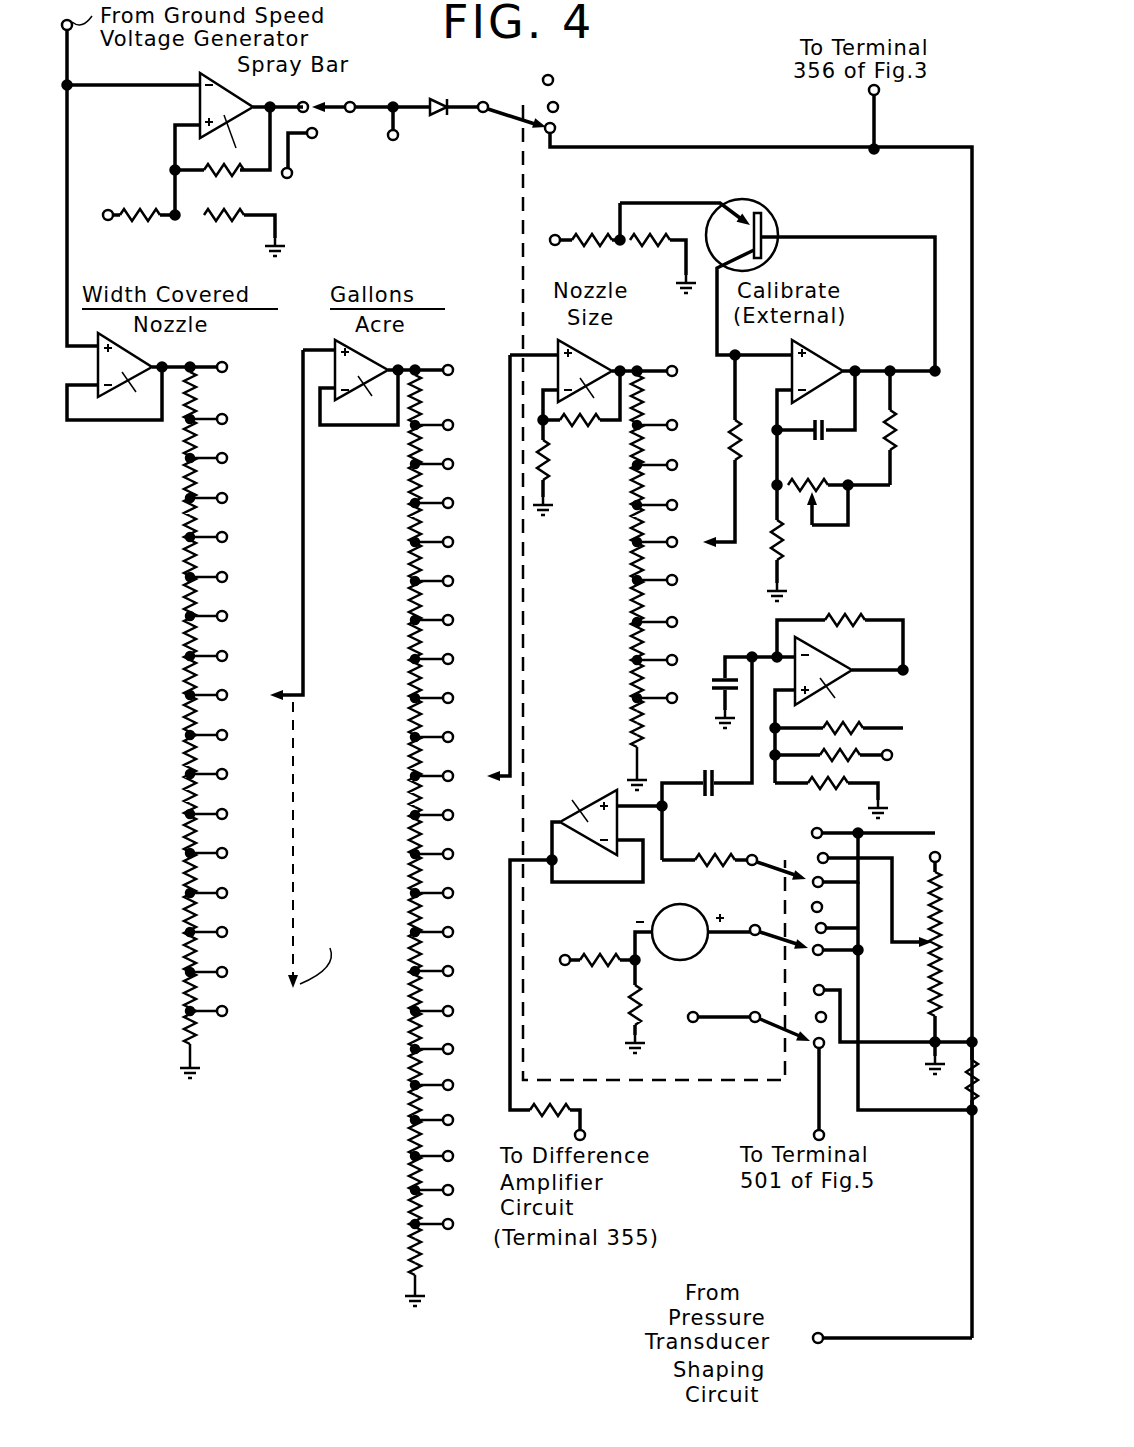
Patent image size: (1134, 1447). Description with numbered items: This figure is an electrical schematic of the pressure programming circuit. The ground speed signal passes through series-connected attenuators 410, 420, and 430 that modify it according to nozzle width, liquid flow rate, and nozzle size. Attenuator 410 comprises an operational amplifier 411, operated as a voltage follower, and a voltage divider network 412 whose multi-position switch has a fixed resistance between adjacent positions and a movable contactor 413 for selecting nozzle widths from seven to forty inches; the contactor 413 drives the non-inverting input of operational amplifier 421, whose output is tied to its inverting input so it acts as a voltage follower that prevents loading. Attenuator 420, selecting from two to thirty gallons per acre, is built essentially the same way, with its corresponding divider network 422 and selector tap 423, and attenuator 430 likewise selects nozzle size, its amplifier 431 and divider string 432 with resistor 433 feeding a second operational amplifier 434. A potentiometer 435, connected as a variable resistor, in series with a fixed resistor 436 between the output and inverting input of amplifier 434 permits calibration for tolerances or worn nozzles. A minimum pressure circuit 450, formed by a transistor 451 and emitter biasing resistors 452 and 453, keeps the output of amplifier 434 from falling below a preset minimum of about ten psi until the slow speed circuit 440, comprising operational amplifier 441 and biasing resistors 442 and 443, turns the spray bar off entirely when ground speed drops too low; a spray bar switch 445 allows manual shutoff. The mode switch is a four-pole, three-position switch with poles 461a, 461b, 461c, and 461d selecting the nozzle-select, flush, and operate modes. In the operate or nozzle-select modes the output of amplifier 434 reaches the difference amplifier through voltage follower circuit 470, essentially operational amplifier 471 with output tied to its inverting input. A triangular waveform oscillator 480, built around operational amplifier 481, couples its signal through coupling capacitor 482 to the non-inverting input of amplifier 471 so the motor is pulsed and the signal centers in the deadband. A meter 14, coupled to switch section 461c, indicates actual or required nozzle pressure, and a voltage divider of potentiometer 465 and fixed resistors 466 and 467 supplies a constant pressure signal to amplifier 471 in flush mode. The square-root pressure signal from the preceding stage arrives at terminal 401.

The terminal 401 is at (820, 1332).
The attenuator 410 is at (231, 662).
The operational amplifier 411 is at (147, 376).
The voltage divider network 412 is at (168, 688).
The movable contactor 413 is at (298, 700).
The attenuator 420 is at (420, 776).
The operational amplifier 421 is at (386, 382).
The tapped resistor string 422 is at (398, 710).
The tap lead 423 is at (490, 786).
The attenuator 430 is at (628, 547).
The amplifier 431 is at (581, 443).
The tapped resistor string 432 is at (618, 630).
The resistor 433 is at (717, 550).
The second operational amplifier 434 is at (853, 465).
The potentiometer 435 is at (795, 482).
The fixed resistor 436 is at (900, 435).
The slow speed circuit 440 is at (286, 154).
The operational amplifier 441 is at (234, 159).
The biasing resistor 442 is at (124, 212).
The biasing resistor 443 is at (228, 214).
The spray bar switch 445 is at (343, 106).
The minimum pressure circuit 450 is at (735, 264).
The transistor 451 is at (752, 208).
The emitter biasing resistor 452 is at (597, 210).
The emitter biasing resistor 453 is at (652, 246).
The movable contactor 461a is at (518, 118).
The movable contactor 461b is at (772, 874).
The movable contactor 461c is at (778, 962).
The movable contactor 461d is at (770, 1036).
The potentiometer 465 is at (928, 962).
The fixed resistor 466 is at (930, 1005).
The fixed resistor 467 is at (928, 872).
The voltage follower circuit 470 is at (586, 951).
The operational amplifier 471 is at (605, 822).
The triangular waveform oscillator 480 is at (785, 711).
The operational amplifier 481 is at (812, 727).
The coupling capacitor 482 is at (704, 778).
The meter 14 is at (660, 960).